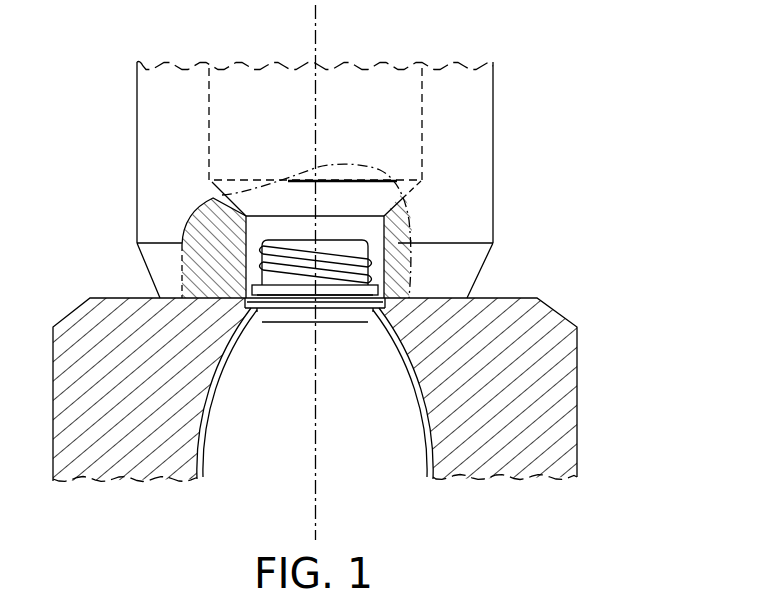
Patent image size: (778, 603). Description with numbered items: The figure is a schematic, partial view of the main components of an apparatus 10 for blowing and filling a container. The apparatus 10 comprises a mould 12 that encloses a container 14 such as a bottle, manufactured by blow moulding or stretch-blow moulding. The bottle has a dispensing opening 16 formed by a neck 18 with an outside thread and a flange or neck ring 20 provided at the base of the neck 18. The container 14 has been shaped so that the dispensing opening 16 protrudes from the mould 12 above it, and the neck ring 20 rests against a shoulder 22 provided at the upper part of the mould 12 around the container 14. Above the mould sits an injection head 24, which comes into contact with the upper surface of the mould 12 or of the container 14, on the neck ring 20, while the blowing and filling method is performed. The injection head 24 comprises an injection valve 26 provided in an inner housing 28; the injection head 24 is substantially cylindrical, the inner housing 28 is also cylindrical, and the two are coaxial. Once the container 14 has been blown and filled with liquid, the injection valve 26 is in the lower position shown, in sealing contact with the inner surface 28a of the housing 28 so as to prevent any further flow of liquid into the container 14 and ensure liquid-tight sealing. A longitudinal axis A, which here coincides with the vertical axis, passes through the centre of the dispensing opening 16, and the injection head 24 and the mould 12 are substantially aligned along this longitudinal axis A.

The apparatus 10 is at (634, 108).
The mould 12 is at (578, 377).
The container 14 is at (327, 430).
The dispensing opening 16 is at (293, 240).
The neck 18 is at (262, 259).
The neck ring 20 is at (291, 302).
The shoulder 22 is at (396, 301).
The injection head 24 is at (529, 85).
The injection valve 26 is at (350, 197).
The inner housing 28 is at (422, 96).
The inner surface 28a is at (217, 185).
The longitudinal axis A is at (315, 32).